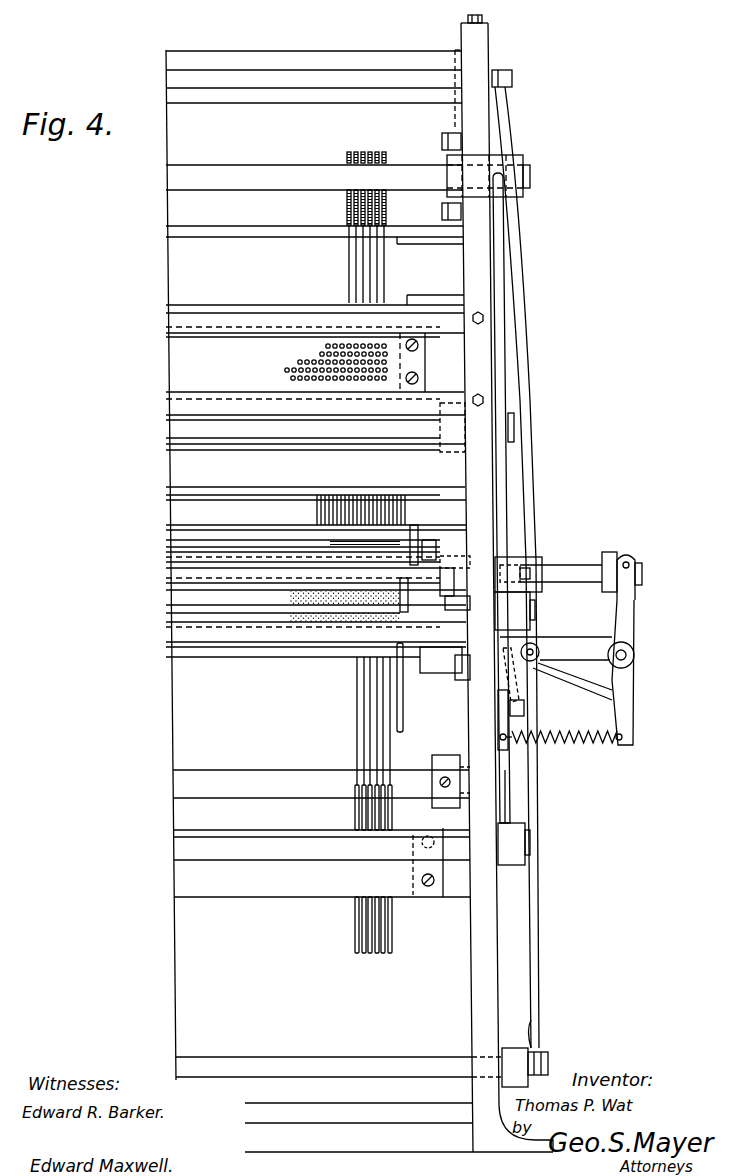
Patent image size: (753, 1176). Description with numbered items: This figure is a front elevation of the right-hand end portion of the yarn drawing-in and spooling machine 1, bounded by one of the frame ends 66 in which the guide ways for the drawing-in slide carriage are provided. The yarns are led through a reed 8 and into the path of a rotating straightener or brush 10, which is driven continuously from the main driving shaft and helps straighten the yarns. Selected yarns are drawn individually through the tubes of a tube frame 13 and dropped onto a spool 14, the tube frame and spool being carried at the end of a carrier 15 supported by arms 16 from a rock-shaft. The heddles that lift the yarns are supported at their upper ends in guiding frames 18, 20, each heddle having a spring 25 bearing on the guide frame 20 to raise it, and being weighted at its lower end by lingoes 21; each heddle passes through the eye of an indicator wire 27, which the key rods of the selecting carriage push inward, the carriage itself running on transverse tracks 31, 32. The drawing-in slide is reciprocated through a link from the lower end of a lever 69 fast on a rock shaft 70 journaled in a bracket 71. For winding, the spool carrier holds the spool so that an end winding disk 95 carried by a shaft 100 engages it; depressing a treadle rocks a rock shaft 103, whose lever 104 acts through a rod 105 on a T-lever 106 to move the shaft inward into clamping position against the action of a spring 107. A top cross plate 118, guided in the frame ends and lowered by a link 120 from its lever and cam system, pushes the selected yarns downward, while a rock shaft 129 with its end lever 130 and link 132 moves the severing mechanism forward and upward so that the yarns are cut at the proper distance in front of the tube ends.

The wires 1 is at (365, 751).
The reed 8 is at (325, 512).
The rotating straightener or brush 10 is at (185, 599).
The tube frame 13 is at (190, 535).
The spool 14 is at (360, 590).
The carrier 15 is at (210, 618).
The arms 16 is at (404, 713).
The guiding frame 18 is at (180, 444).
The guiding frame 20 is at (180, 236).
The weights or lingoes 21 is at (357, 941).
The spring 25 is at (346, 206).
The indicator wire 27 is at (292, 378).
The transverse track 31 is at (180, 320).
The transverse track 32 is at (180, 408).
The frame end 66 is at (480, 975).
The lever 69 is at (500, 348).
The rock shaft 70 is at (185, 183).
The bracket 71 is at (455, 154).
The end winding disk 95 is at (430, 553).
The shaft 100 is at (572, 580).
The rock shaft 103 is at (412, 1062).
The lever 104 is at (530, 1048).
The rod 105 is at (534, 973).
The T-lever 106 is at (625, 625).
The spring 107 is at (583, 750).
The top cross plate 118 is at (185, 96).
The link 120 is at (533, 318).
The rock shaft 129 is at (186, 848).
The end lever 130 is at (510, 808).
The link 132 is at (520, 696).